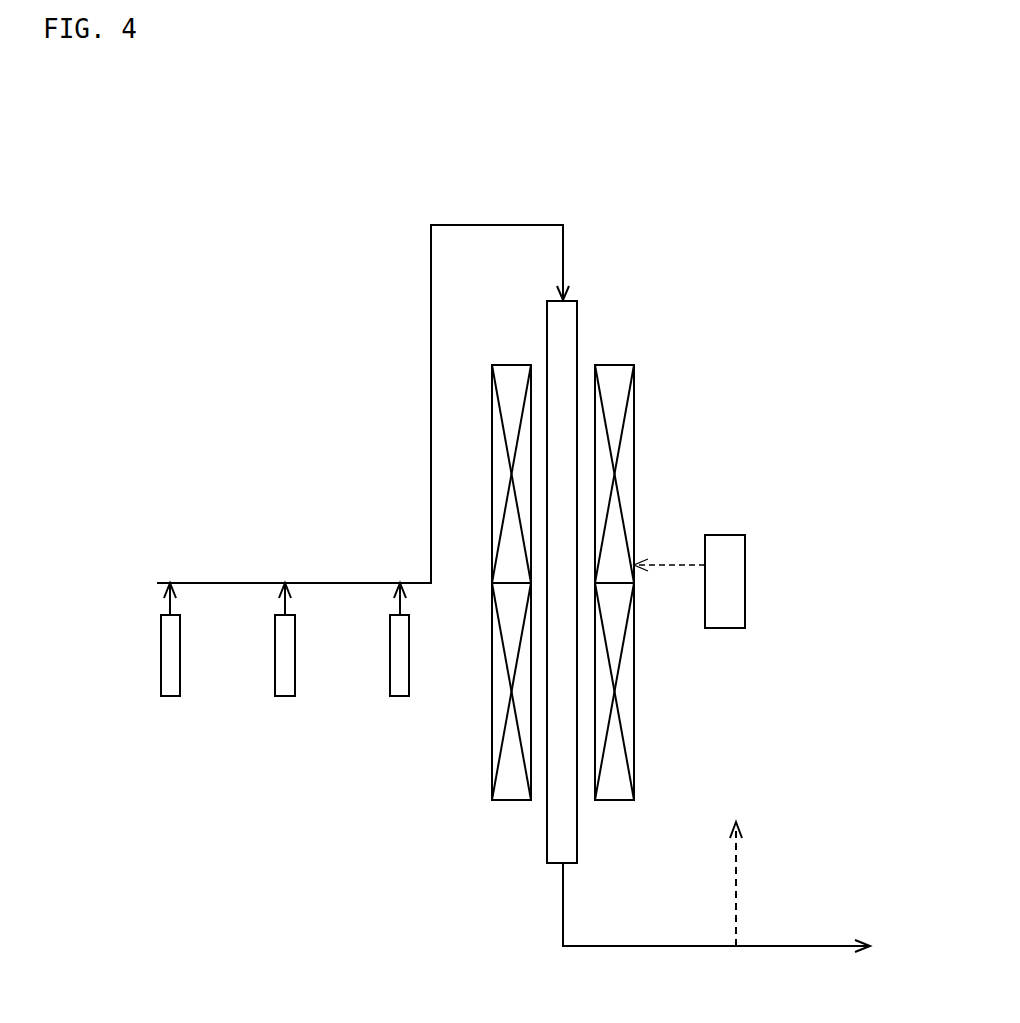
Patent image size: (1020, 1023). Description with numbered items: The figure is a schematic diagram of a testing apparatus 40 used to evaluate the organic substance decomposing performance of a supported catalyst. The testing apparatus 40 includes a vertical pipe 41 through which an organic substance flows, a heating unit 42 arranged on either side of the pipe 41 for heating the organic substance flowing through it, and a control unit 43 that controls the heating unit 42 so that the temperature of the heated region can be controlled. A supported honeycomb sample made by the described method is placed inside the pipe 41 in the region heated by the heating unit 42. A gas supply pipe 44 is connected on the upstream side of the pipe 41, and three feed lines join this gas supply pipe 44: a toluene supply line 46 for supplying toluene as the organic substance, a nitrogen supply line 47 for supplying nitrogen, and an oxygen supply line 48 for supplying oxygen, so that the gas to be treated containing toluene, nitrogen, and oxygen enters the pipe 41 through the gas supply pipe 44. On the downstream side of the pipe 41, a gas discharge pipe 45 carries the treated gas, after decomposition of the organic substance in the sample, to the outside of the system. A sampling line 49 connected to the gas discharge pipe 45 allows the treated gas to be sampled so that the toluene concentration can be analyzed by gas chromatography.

The testing apparatus 40 is at (672, 240).
The pipe 41 is at (577, 340).
The heating unit 42 is at (492, 398).
The control unit 43 is at (745, 582).
The gas supply pipe 44 is at (431, 497).
The gas discharge pipe 45 is at (666, 946).
The toluene supply line 46 is at (161, 648).
The nitrogen supply line 47 is at (275, 650).
The oxygen supply line 48 is at (390, 648).
The sampling line 49 is at (737, 872).